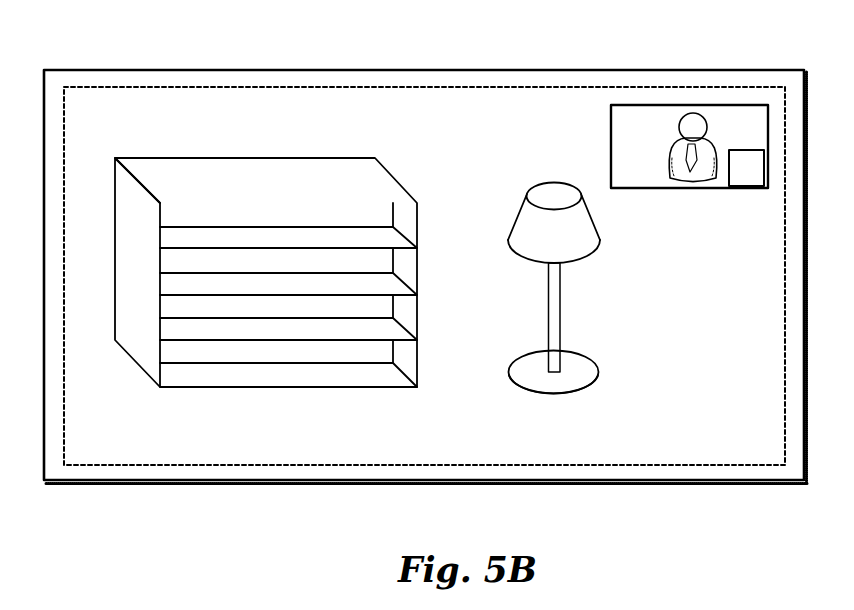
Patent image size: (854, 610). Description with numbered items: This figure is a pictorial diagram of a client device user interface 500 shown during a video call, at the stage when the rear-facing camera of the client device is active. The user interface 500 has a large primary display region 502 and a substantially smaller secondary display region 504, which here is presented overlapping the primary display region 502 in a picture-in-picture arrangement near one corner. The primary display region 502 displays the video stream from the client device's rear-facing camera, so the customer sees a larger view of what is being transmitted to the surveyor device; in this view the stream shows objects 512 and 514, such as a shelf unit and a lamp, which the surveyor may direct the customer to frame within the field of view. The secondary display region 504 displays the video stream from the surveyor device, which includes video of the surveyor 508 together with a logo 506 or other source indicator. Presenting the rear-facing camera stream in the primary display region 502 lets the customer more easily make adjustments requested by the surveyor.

The user interface 500 is at (717, 70).
The primary display region 502 is at (158, 465).
The secondary display region 504 is at (689, 169).
The logo 506 is at (746, 168).
The surveyor 508 is at (658, 154).
The object 512 is at (438, 370).
The object 514 is at (623, 368).